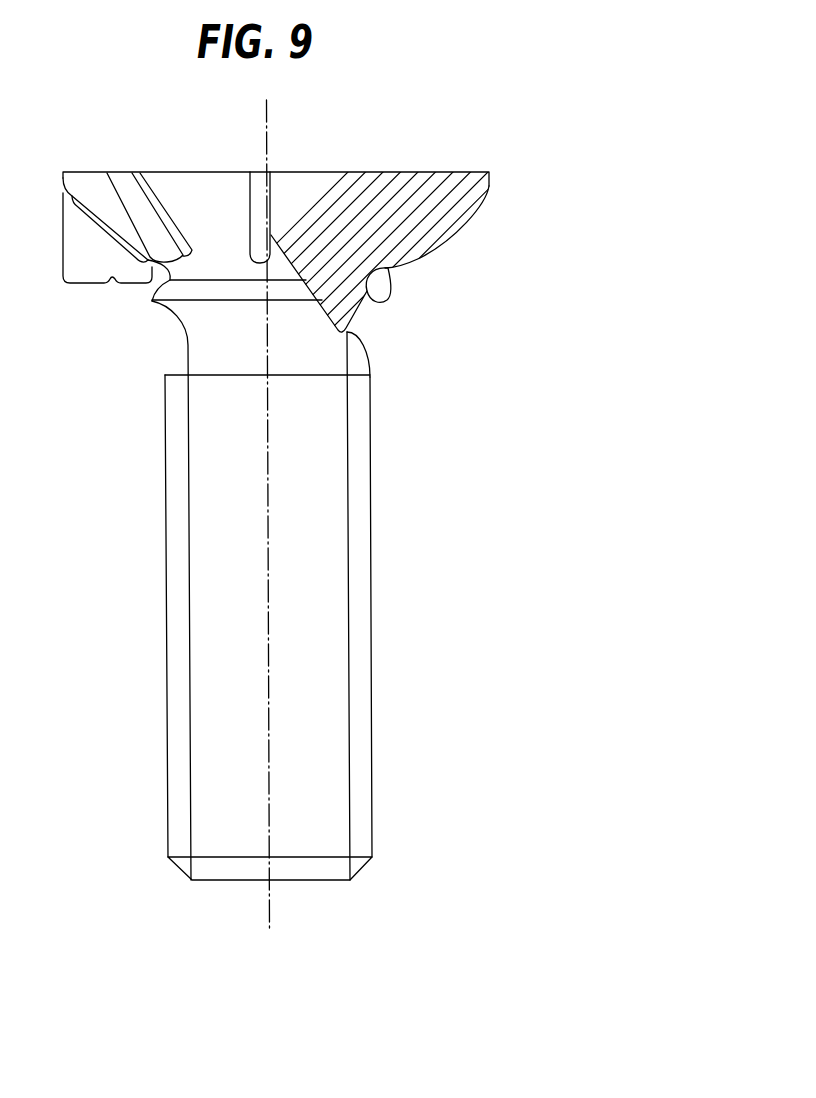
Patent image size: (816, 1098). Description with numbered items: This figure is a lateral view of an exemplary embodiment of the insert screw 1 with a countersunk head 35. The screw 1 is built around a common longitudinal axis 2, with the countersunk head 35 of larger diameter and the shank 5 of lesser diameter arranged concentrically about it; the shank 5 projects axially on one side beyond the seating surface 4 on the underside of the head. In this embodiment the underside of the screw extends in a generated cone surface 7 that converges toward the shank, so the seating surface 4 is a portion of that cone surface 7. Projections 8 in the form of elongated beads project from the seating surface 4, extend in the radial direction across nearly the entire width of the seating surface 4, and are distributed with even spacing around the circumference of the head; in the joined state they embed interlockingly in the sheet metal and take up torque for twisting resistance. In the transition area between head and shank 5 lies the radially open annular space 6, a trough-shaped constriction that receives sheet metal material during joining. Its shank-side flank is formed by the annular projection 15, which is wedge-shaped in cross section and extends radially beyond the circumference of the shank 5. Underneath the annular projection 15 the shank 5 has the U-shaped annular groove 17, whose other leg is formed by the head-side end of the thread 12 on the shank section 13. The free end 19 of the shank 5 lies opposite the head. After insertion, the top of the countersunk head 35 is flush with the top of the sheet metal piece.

The screw 1 is at (244, 643).
The longitudinal axis 2 is at (267, 138).
The seating surface 4 is at (110, 287).
The shank 5 is at (322, 556).
The annular space 6 is at (385, 282).
The conical bearing surface of head 7 is at (448, 276).
The projections 8 is at (258, 174).
The thread 12 is at (360, 488).
The shank section 13 is at (165, 556).
The annular projection 15 is at (150, 306).
The annular groove 17 is at (163, 343).
The free end 19 is at (395, 876).
The countersunk head 35 is at (450, 171).